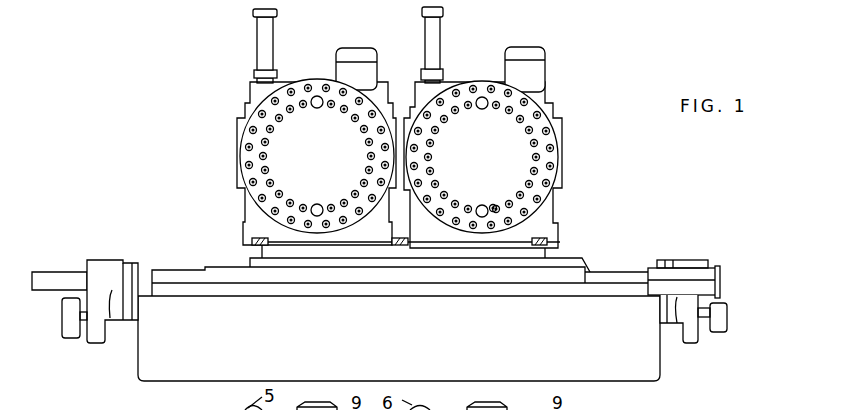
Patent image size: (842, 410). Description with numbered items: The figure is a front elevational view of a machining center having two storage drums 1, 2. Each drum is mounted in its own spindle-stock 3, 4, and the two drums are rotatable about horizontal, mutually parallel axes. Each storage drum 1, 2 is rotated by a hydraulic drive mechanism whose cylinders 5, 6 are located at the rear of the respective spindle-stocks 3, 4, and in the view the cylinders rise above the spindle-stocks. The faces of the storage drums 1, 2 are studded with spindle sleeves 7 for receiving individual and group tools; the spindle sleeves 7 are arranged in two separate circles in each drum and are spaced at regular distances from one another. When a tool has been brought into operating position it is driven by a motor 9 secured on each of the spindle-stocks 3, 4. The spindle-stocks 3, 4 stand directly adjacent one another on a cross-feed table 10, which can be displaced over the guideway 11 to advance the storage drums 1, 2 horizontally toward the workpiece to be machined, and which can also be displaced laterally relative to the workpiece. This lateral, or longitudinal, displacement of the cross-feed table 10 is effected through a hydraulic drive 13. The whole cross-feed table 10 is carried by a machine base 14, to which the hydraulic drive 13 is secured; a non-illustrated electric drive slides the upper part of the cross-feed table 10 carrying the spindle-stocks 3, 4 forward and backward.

The storage drum 1 is at (295, 133).
The storage drum 2 is at (474, 77).
The spindle-stock 3 is at (237, 120).
The spindle-stock 4 is at (562, 118).
The cylinder 5 is at (255, 11).
The cylinder 6 is at (422, 12).
The spindle sleeve 7 is at (246, 147).
The motor 9 is at (358, 67).
The cross-feed table 10 is at (252, 231).
The guideway 11 is at (560, 242).
The hydraulic drive 13 is at (705, 272).
The machine base 14 is at (152, 365).